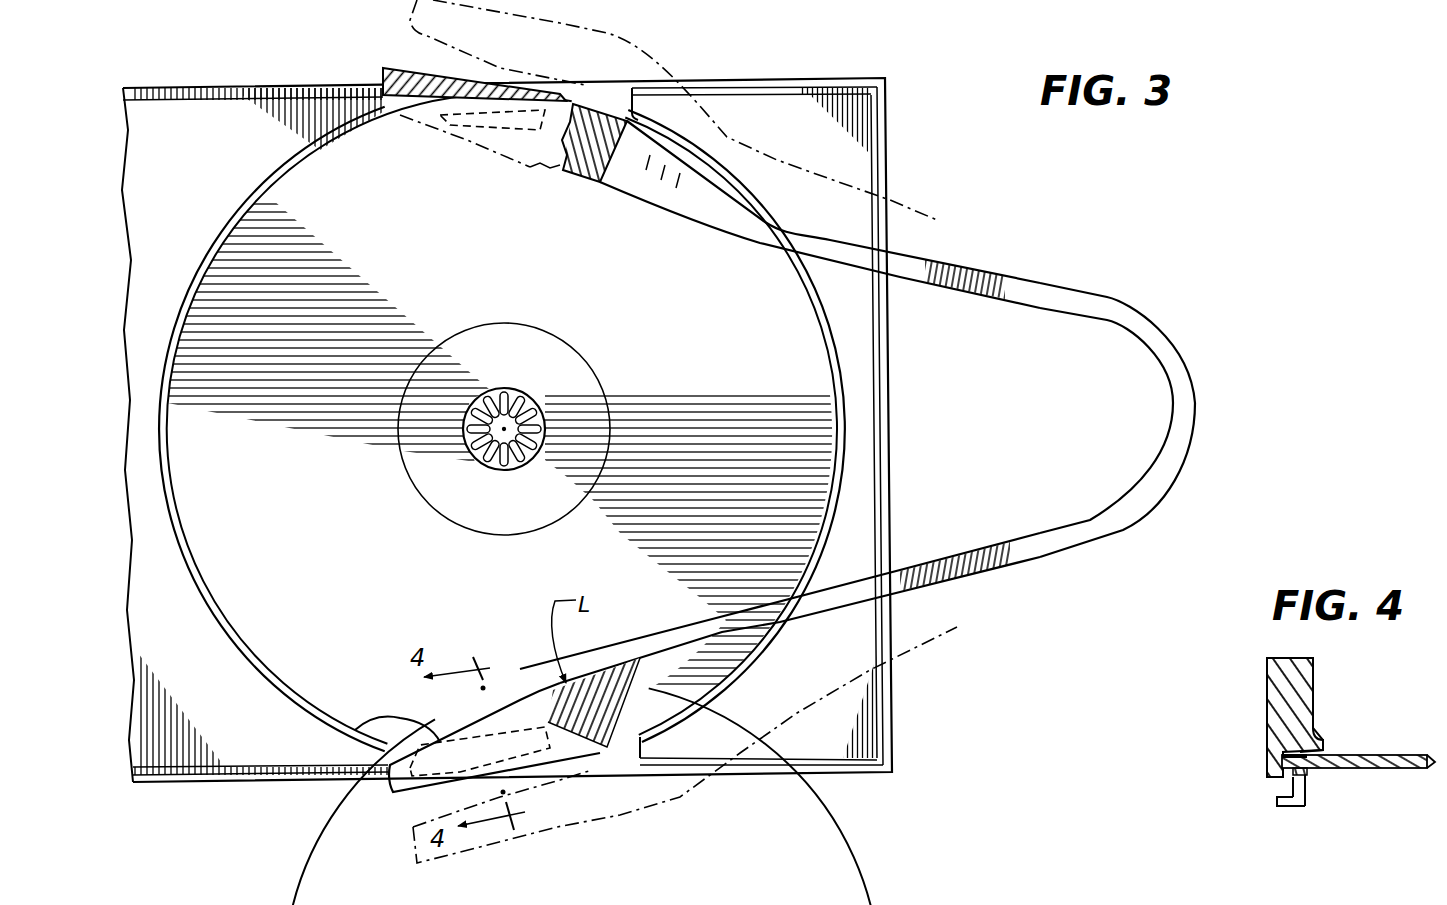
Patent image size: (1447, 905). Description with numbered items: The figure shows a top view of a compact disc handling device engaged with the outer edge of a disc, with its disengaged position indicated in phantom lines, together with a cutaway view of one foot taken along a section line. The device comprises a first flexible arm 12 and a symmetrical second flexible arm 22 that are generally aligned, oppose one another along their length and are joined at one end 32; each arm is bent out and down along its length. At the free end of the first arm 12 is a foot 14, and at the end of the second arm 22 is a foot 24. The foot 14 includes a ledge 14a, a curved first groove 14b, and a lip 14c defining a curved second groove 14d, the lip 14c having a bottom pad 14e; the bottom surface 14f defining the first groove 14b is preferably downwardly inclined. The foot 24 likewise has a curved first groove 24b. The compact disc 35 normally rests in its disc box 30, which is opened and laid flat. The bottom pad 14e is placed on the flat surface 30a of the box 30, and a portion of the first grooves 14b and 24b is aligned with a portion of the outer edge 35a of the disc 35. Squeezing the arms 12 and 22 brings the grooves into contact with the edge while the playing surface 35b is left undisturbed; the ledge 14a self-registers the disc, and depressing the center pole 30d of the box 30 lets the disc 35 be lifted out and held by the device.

In FIG. 3, the first flexible arm 12 is at (1010, 562).
In FIG. 3, the foot 14 is at (600, 753).
In FIG. 4, the foot 14 is at (1275, 680).
In FIG. 3, the ledge 14a is at (358, 727).
In FIG. 4, the ledge 14a is at (1315, 738).
In FIG. 4, the curved first groove 14b is at (1290, 760).
In FIG. 4, the lip 14c is at (1308, 806).
In FIG. 4, the curved second groove 14d is at (1290, 784).
In FIG. 4, the bottom pad 14e is at (1290, 808).
In FIG. 4, the bottom surface 14f is at (1310, 773).
In FIG. 3, the second flexible arm 22 is at (980, 272).
In FIG. 3, the foot 24 is at (590, 107).
In FIG. 3, the curved first groove 24b is at (487, 108).
In FIG. 3, the disc box 30 is at (897, 731).
In FIG. 3, the flat surface 30a is at (627, 765).
In FIG. 3, the center pole 30d is at (520, 395).
In FIG. 3, the joined end 32 is at (1187, 412).
In FIG. 3, the compact disc 35 is at (337, 135).
In FIG. 4, the compact disc 35 is at (1350, 762).
In FIG. 3, the outer edge 35a is at (267, 665).
In FIG. 3, the playing surface 35b is at (787, 422).